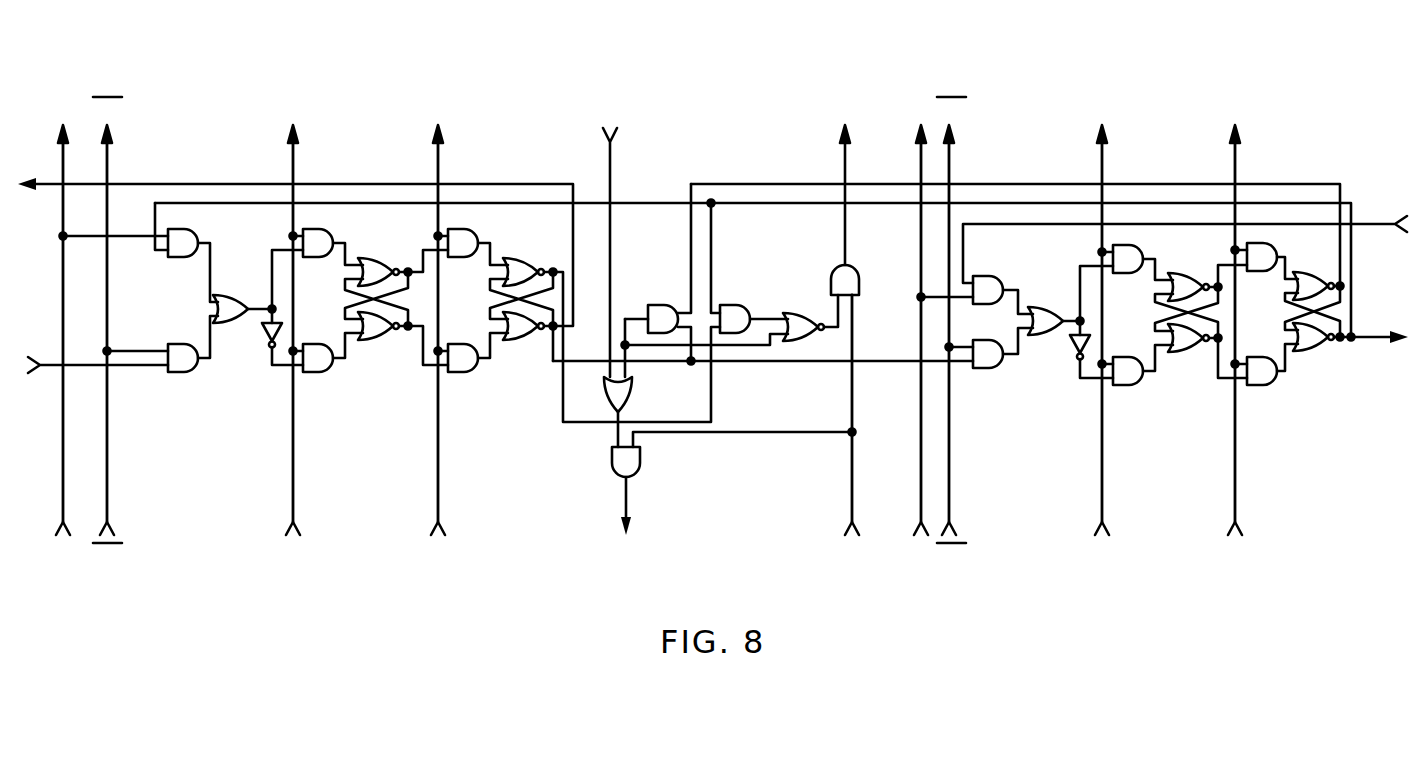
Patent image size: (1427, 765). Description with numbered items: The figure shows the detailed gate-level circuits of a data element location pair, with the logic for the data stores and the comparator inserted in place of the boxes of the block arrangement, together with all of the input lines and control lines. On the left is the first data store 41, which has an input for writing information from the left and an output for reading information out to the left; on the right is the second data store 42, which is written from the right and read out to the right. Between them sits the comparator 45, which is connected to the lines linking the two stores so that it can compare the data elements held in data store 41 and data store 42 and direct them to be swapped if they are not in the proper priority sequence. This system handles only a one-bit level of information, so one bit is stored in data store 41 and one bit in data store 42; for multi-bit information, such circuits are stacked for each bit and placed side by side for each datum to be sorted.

The first data store 41 is at (367, 110).
The comparator 45 is at (749, 122).
The second data store 42 is at (1151, 109).